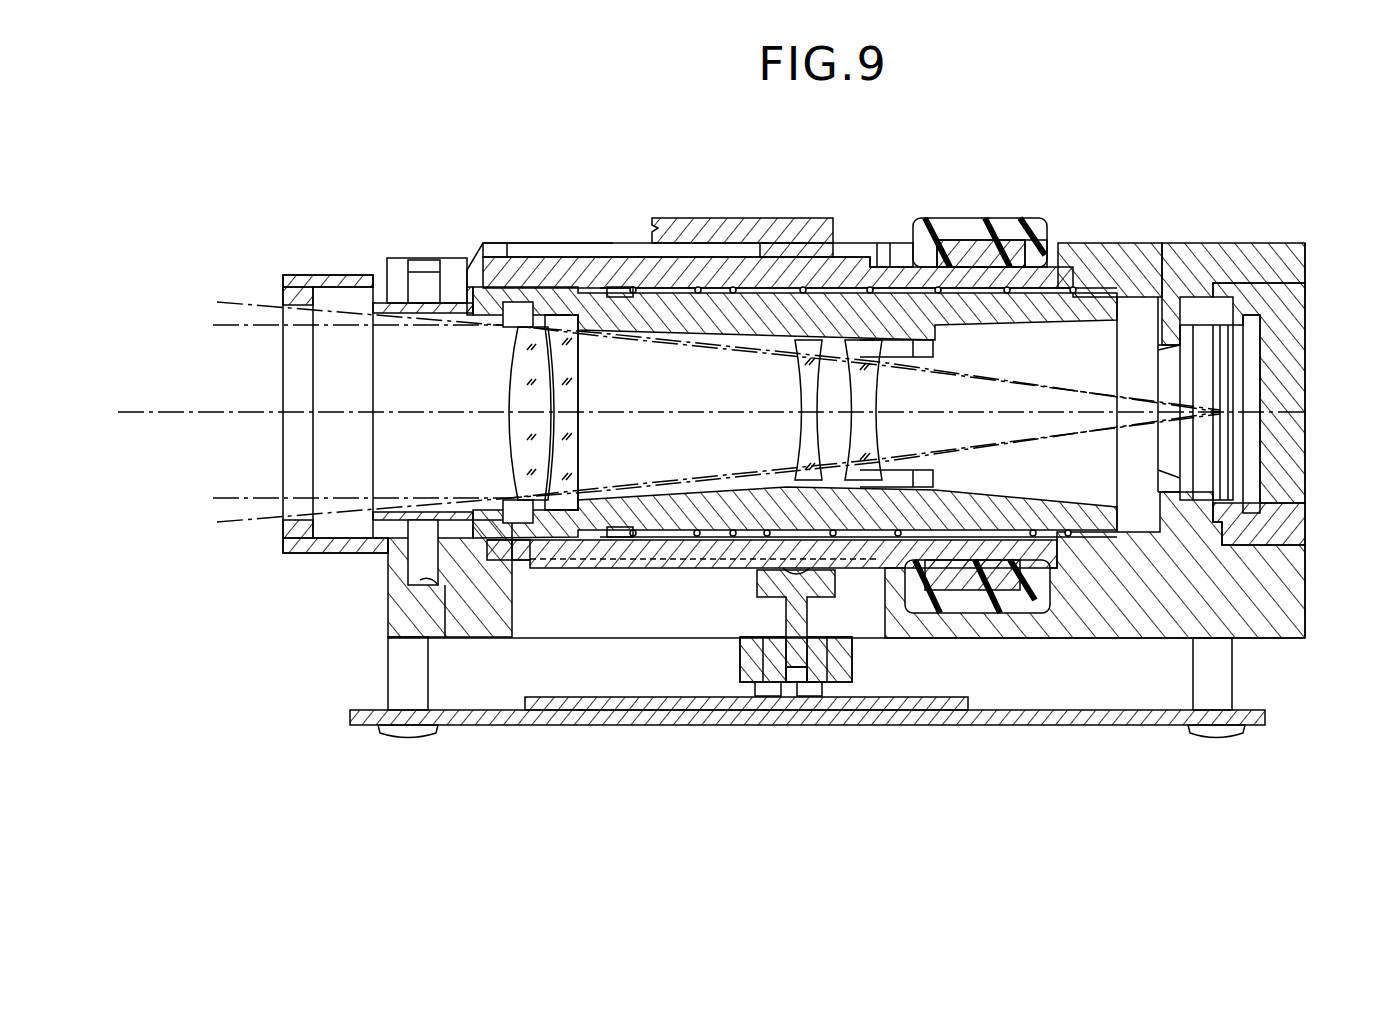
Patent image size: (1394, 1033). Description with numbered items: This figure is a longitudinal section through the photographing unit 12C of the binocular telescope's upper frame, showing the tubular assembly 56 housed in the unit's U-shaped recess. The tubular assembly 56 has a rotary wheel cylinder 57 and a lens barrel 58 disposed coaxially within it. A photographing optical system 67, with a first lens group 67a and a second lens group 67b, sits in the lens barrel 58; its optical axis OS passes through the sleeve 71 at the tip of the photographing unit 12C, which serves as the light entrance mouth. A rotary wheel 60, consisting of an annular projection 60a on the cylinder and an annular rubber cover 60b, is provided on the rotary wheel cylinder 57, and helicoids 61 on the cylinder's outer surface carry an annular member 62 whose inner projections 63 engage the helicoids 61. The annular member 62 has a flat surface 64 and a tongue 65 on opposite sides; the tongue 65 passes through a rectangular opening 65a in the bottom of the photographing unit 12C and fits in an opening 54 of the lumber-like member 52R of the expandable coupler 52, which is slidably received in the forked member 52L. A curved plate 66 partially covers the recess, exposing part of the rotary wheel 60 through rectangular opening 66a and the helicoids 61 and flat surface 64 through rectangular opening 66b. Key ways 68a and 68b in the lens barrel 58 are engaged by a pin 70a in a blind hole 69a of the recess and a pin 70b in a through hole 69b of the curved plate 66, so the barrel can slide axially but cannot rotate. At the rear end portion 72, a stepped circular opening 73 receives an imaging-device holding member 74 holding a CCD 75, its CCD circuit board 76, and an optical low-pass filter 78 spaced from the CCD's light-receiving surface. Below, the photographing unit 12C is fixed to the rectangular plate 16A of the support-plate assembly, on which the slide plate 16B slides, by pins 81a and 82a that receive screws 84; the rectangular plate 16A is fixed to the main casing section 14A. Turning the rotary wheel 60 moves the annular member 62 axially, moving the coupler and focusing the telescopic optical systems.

The optical axis of the photographing optical system OS is at (160, 414).
The sleeve 71 is at (290, 275).
The key way 68b is at (385, 303).
The through hole 69b is at (415, 258).
The pin 70b is at (425, 262).
The rectangular opening 66b is at (507, 243).
The rotary wheel cylinder 57 is at (875, 252).
The tubular assembly 56 is at (583, 252).
The main casing section 14A is at (697, 218).
The flat surface 64 is at (768, 250).
The rotary wheel 60 is at (972, 216).
The annular rubber cover 60b is at (938, 222).
The rectangular opening 66a is at (1047, 250).
The curved plate 66 is at (1105, 242).
The photographing unit 12C is at (1218, 242).
The stepped circular opening 73 is at (1290, 298).
The imaging-device holding member 74 is at (1312, 422).
The optical low-pass filter 78 is at (1200, 390).
The CCD circuit board 76 is at (1250, 512).
The CCD 75 is at (1285, 625).
The rear end portion 72 is at (1283, 628).
The annular projection 60a is at (990, 600).
The lens barrel 58 is at (745, 340).
The photographing optical system 67 is at (472, 366).
The first lens group 67a is at (583, 378).
The second lens group 67b is at (790, 450).
The key way 68a is at (375, 520).
The pin 70a is at (420, 540).
The blind hole 69a is at (445, 600).
The rectangular opening 65a is at (512, 625).
The helicoids 61 is at (610, 570).
The projections 63 is at (795, 572).
The tongue 65 is at (786, 622).
The annular member 62 is at (843, 590).
The forked member 52L is at (755, 682).
The lumber-like member 52R is at (820, 682).
The expandable coupler 52 is at (860, 668).
The opening 54 is at (796, 685).
The pin 82a is at (388, 680).
The pin 81a is at (1232, 680).
The slide plate 16B is at (975, 703).
The rectangular plate 16A is at (1098, 728).
The screws 84 is at (430, 738).